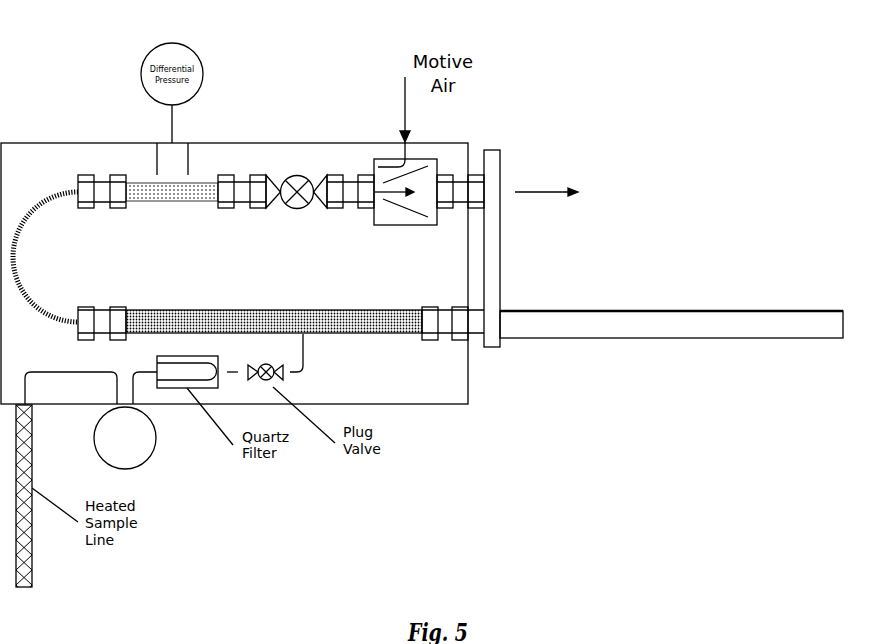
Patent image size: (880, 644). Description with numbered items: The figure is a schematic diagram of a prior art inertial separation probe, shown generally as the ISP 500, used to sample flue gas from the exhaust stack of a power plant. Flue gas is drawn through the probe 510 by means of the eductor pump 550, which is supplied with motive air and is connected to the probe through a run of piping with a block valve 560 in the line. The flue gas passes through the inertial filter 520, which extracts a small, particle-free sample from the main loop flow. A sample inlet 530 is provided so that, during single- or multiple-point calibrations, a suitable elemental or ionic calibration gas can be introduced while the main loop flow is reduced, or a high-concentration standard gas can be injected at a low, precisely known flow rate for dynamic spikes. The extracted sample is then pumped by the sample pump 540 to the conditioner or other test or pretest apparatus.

The inertial separation probe 500 is at (231, 33).
The probe 510 is at (671, 313).
The inertial filter 520 is at (274, 312).
The sample inlet 530 is at (453, 310).
The sample pump 540 is at (125, 438).
The eductor pump 550 is at (390, 158).
The block valve 560 is at (296, 166).